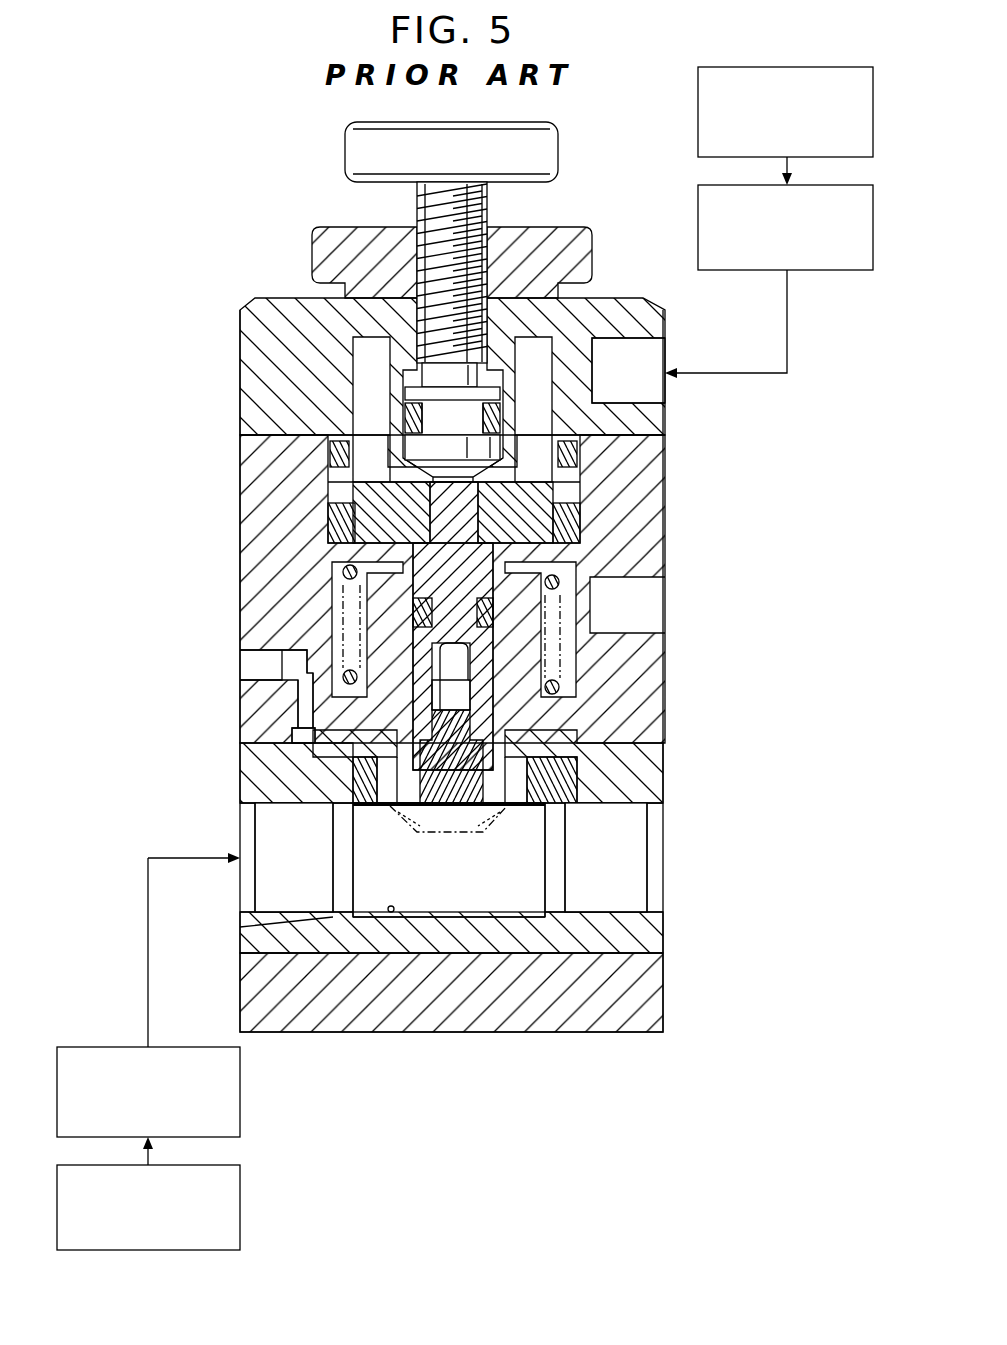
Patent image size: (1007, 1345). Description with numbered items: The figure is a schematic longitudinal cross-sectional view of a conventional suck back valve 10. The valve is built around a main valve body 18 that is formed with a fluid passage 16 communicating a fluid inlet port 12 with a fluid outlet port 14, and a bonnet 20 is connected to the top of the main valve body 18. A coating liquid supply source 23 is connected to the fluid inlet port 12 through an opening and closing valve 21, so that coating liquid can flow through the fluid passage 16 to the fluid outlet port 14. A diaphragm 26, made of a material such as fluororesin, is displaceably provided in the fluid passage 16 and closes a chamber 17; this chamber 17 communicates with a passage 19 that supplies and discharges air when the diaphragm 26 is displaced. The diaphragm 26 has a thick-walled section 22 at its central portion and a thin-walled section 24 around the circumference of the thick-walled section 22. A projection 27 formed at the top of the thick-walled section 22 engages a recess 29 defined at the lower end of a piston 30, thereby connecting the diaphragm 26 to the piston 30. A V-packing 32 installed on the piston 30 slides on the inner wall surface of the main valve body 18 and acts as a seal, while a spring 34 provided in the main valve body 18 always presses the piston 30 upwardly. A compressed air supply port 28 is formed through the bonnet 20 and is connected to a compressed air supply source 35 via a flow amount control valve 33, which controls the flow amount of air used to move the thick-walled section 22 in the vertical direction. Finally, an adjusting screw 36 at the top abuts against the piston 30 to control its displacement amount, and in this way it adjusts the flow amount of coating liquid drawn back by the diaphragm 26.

The suck back valve 10 is at (627, 136).
The fluid inlet port 12 is at (275, 892).
The fluid outlet port 14 is at (617, 872).
The fluid passage 16 is at (390, 913).
The chamber 17 is at (333, 773).
The main valve body 18 is at (668, 720).
The passage 19 is at (263, 662).
The bonnet 20 is at (643, 302).
The opening and closing valve 21 is at (187, 1047).
The thick-walled section 22 is at (450, 808).
The coating liquid supply source 23 is at (240, 1180).
The thin-walled section 24 is at (392, 812).
The diaphragm 26 is at (498, 816).
The projection 27 is at (300, 716).
The compressed air supply port 28 is at (643, 400).
The recess 29 is at (450, 693).
The piston 30 is at (478, 567).
The V-packing 32 is at (330, 530).
The flow amount control valve 33 is at (832, 272).
The spring 34 is at (570, 687).
The compressed air supply source 35 is at (827, 67).
The adjusting screw 36 is at (487, 203).